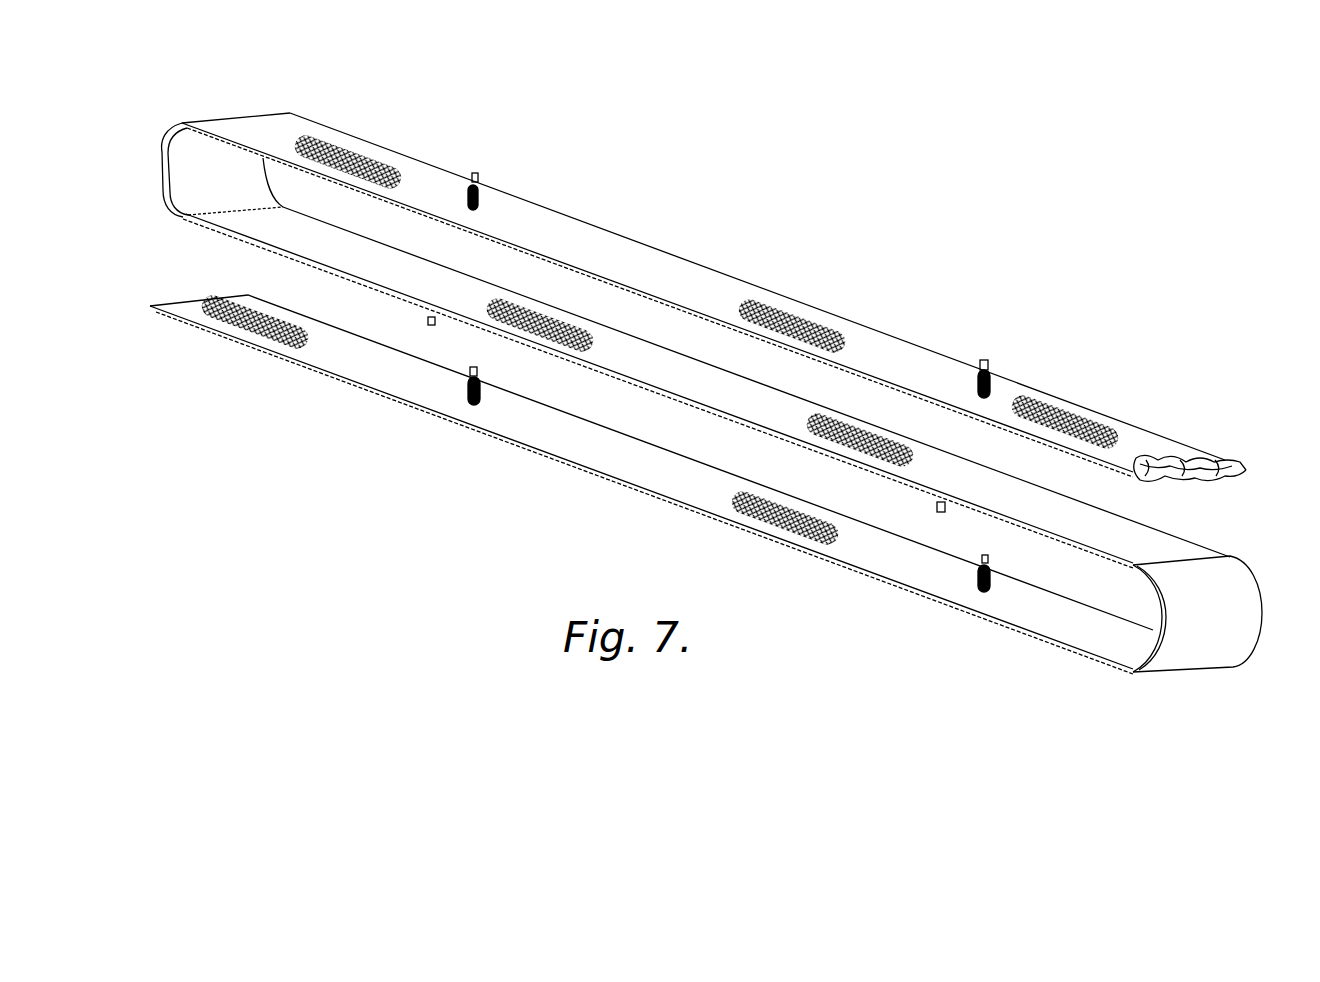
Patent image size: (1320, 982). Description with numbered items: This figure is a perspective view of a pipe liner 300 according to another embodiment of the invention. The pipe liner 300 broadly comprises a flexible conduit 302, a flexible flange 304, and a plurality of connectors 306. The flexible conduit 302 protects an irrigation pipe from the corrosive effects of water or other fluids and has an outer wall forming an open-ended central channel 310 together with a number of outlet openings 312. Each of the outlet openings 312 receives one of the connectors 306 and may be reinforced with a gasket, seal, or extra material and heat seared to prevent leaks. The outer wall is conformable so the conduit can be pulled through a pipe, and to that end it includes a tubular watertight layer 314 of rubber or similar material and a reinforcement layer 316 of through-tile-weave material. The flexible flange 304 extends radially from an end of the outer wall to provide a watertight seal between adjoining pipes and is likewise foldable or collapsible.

The pipe liner 300 is at (808, 184).
The flexible conduit 302 is at (146, 145).
The flexible flange 304 is at (1256, 480).
The connectors 306 is at (265, 228).
The open-ended central channel 310 is at (475, 210).
The outlet openings 312 is at (680, 273).
The tubular watertight layer 314 is at (775, 310).
The reinforcement layer 316 is at (480, 195).